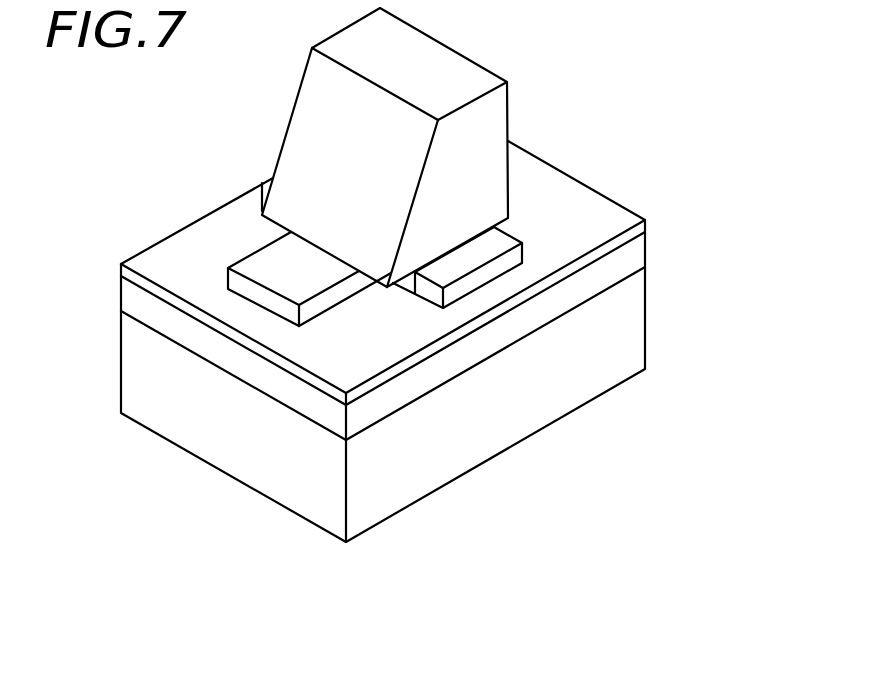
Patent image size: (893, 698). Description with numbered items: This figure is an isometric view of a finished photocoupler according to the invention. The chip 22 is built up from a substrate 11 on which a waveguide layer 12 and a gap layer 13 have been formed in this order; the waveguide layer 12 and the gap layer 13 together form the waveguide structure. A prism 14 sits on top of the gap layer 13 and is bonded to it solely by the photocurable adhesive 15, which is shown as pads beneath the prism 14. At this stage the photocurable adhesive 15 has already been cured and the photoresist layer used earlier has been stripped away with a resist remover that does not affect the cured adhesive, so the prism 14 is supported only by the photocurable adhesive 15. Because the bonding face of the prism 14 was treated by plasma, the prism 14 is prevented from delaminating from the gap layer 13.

The substrate 11 is at (633, 337).
The waveguide layer 12 is at (642, 255).
The gap layer 13 is at (648, 216).
The prism 14 is at (467, 55).
The photocurable adhesive 15 is at (263, 260).
The chip 22 is at (444, 271).